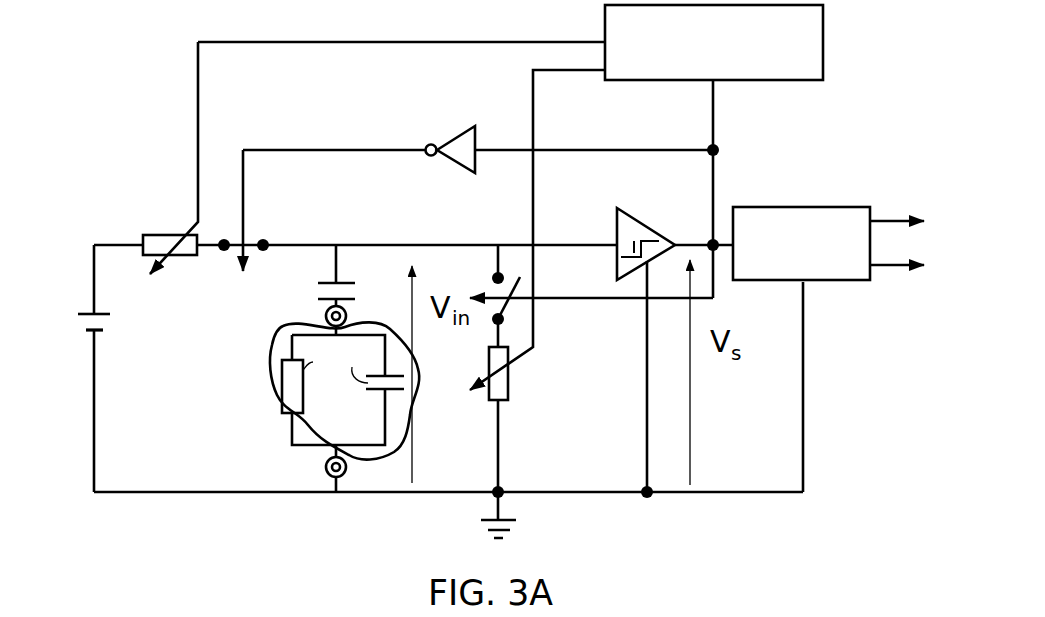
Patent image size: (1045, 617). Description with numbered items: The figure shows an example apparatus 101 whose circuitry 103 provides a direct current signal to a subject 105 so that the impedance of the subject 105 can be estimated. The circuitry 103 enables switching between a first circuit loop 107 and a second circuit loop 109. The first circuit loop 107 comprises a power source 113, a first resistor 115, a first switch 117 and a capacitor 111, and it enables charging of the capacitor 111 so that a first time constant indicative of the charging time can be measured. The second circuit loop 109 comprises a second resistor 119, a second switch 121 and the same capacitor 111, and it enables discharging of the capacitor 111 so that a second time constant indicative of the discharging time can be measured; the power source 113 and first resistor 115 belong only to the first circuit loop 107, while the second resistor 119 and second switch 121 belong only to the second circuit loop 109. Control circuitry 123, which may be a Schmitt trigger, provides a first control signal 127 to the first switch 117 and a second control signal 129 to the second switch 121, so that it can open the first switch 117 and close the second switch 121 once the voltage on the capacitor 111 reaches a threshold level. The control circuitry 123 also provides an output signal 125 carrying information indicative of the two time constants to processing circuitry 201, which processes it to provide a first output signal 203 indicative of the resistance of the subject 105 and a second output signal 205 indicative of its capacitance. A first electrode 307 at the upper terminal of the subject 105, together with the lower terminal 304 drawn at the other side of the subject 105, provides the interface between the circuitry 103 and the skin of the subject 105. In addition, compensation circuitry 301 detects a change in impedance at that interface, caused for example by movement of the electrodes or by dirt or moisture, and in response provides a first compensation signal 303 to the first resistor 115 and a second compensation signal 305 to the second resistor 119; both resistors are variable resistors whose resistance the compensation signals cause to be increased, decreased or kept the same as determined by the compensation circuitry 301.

The apparatus 101 is at (166, 77).
The circuitry 103 is at (175, 494).
The subject 105 is at (289, 432).
The first circuit loop 107 is at (93, 400).
The second circuit loop 109 is at (562, 495).
The capacitor 111 is at (355, 299).
The power source 113 is at (108, 299).
The first resistor 115 is at (160, 234).
The first switch 117 is at (250, 238).
The second resistor 119 is at (510, 390).
The second switch 121 is at (496, 322).
The control circuitry 123 is at (617, 215).
The output signal 125 is at (710, 240).
The first control signal 127 is at (343, 148).
The second control signal 129 is at (575, 300).
The processing circuitry 201 is at (820, 187).
The first output signal 203 is at (905, 215).
The second output signal 205 is at (903, 268).
The compensation circuitry 301 is at (824, 30).
The first compensation signal 303 is at (495, 20).
The sensor terminal (lower) 304 is at (355, 481).
The second compensation signal 305 is at (570, 71).
The first electrode 307 is at (322, 316).